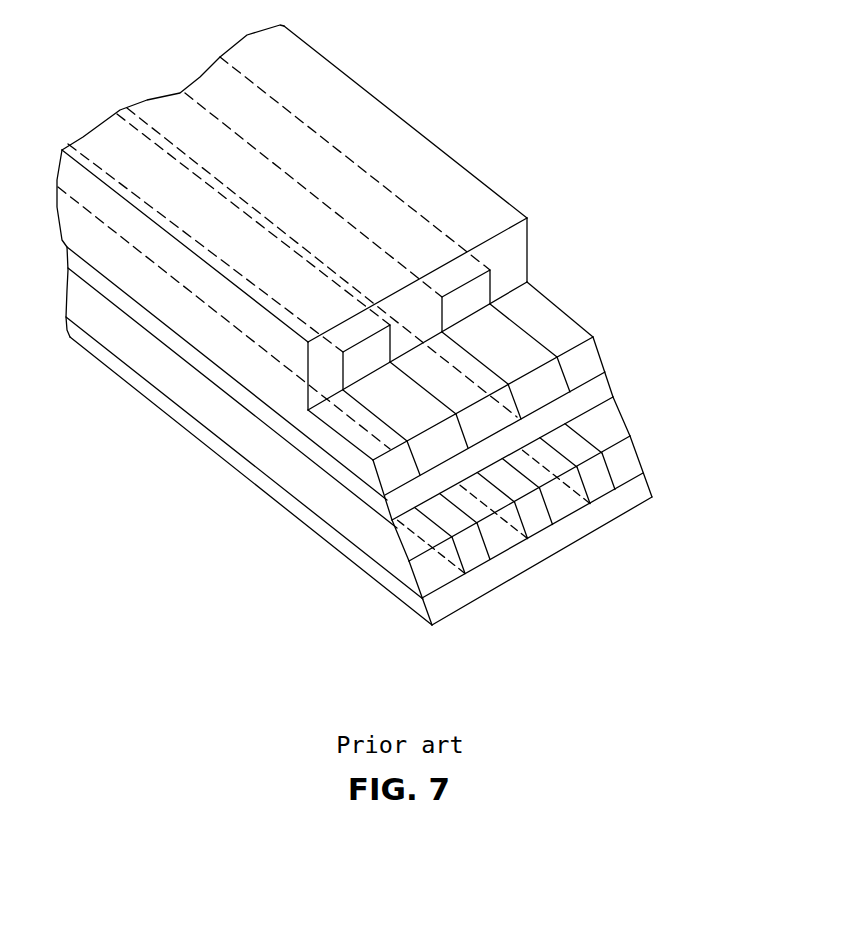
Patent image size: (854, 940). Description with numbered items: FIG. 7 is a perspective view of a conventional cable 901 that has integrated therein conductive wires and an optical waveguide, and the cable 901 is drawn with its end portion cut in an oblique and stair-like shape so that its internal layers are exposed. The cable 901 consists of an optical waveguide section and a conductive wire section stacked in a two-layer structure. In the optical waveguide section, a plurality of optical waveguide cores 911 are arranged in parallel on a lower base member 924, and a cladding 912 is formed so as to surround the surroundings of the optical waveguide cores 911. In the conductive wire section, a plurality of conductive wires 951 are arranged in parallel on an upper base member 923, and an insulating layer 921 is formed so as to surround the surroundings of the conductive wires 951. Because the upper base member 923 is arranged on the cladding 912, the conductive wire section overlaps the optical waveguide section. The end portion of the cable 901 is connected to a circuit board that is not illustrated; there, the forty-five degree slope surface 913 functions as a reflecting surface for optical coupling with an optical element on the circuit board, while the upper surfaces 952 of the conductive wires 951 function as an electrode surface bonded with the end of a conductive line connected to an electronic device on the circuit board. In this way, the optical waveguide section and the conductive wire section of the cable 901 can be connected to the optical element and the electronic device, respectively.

The cable 901 is at (421, 131).
The insulating layer 921 is at (527, 263).
The upper surfaces of conductive wires 952 is at (515, 333).
The conductive wires 951 is at (561, 374).
The upper base member 923 is at (600, 396).
The cladding 912 is at (630, 444).
The lower base member 924 is at (649, 493).
The optical waveguide cores 911 is at (595, 490).
The 45° slope surface 913 is at (427, 562).